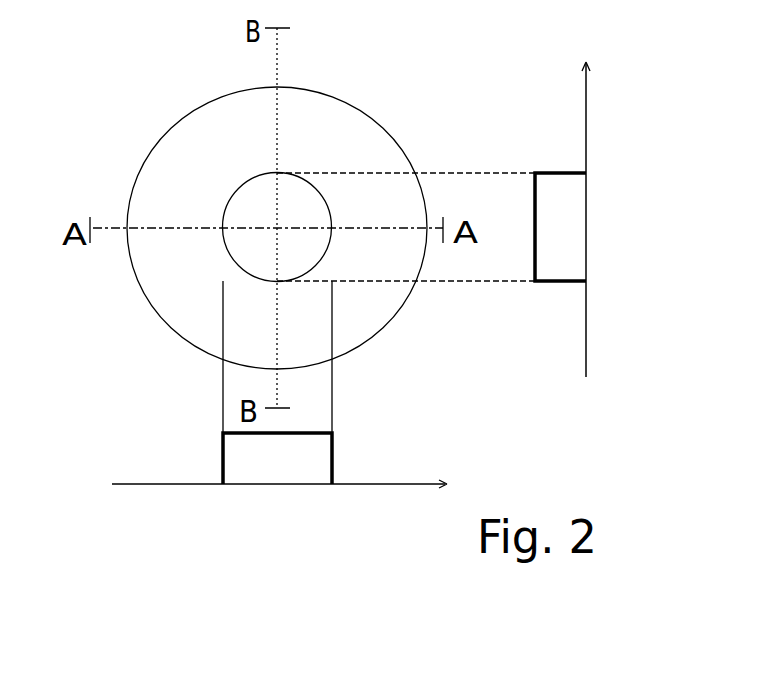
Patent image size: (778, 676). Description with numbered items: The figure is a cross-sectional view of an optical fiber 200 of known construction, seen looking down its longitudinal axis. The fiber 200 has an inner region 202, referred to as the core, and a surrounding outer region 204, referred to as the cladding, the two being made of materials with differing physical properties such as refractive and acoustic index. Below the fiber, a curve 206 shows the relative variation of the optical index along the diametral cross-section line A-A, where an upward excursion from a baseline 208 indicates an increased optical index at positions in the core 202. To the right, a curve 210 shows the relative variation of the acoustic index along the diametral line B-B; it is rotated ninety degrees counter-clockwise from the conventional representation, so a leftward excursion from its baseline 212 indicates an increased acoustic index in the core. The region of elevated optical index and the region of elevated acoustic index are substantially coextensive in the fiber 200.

The fiber 200 is at (172, 61).
The inner region (core) 202 is at (255, 195).
The outer region (cladding) 204 is at (155, 170).
The curve 206 is at (222, 460).
The baseline 208 is at (167, 486).
The curve 210 is at (535, 223).
The baseline 212 is at (588, 359).